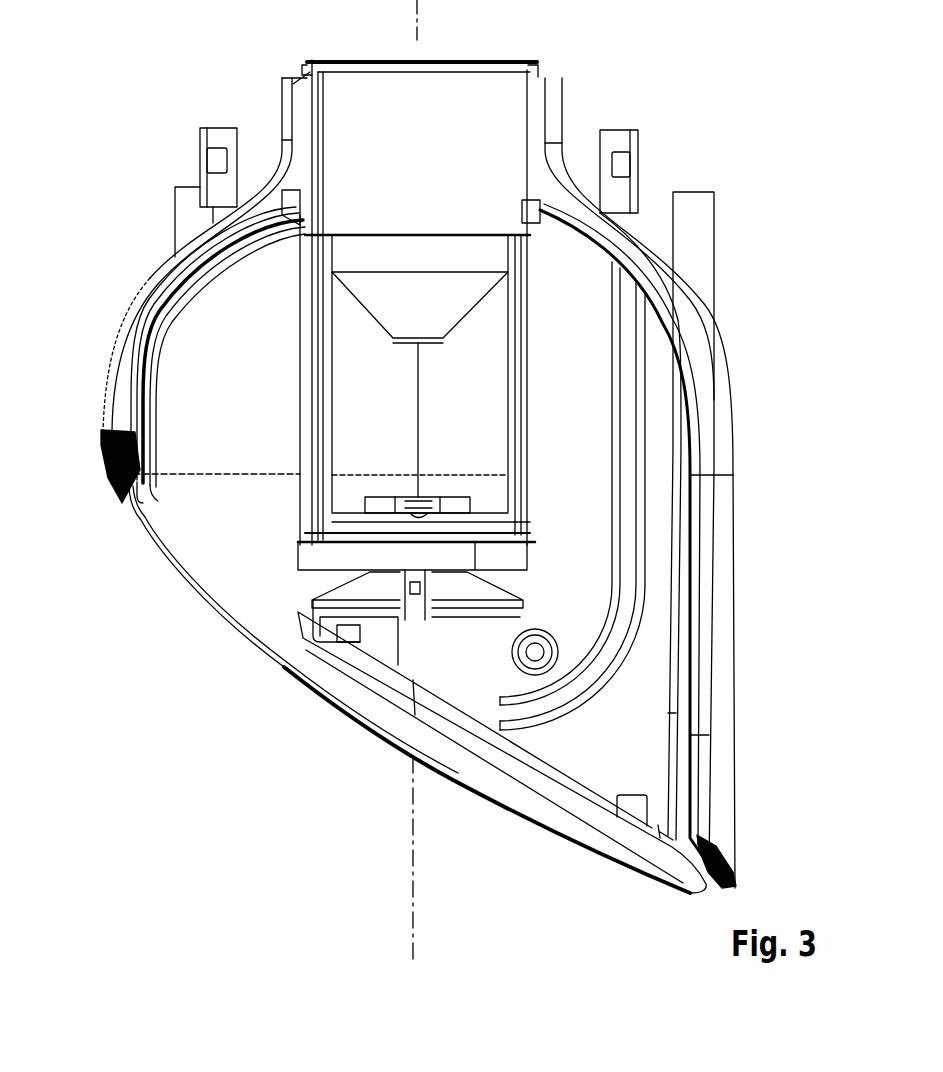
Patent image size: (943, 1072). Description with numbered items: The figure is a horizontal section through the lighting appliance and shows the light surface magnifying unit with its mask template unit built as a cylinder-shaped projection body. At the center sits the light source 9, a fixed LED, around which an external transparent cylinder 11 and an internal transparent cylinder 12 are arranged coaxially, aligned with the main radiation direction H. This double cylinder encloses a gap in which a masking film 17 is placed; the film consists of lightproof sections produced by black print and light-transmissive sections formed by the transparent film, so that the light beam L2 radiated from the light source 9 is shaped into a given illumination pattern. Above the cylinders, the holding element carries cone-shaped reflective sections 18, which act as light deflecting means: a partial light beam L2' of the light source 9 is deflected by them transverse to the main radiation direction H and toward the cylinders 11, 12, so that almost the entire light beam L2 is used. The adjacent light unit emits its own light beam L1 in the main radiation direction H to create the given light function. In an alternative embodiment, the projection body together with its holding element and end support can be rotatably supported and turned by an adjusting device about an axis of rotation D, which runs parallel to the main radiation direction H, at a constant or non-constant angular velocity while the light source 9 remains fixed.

The external transparent cylinder 11 is at (318, 343).
The masking film 17 is at (327, 403).
The internal transparent cylinder 12 is at (337, 437).
The cone-shaped reflective sections 18 is at (447, 332).
The light source 9 is at (421, 497).
The light beam L1 is at (112, 463).
The light beam L2 is at (348, 739).
The partial light beam L2' is at (468, 373).
The axis of rotation D is at (413, 942).
The main radiation direction H is at (588, 895).